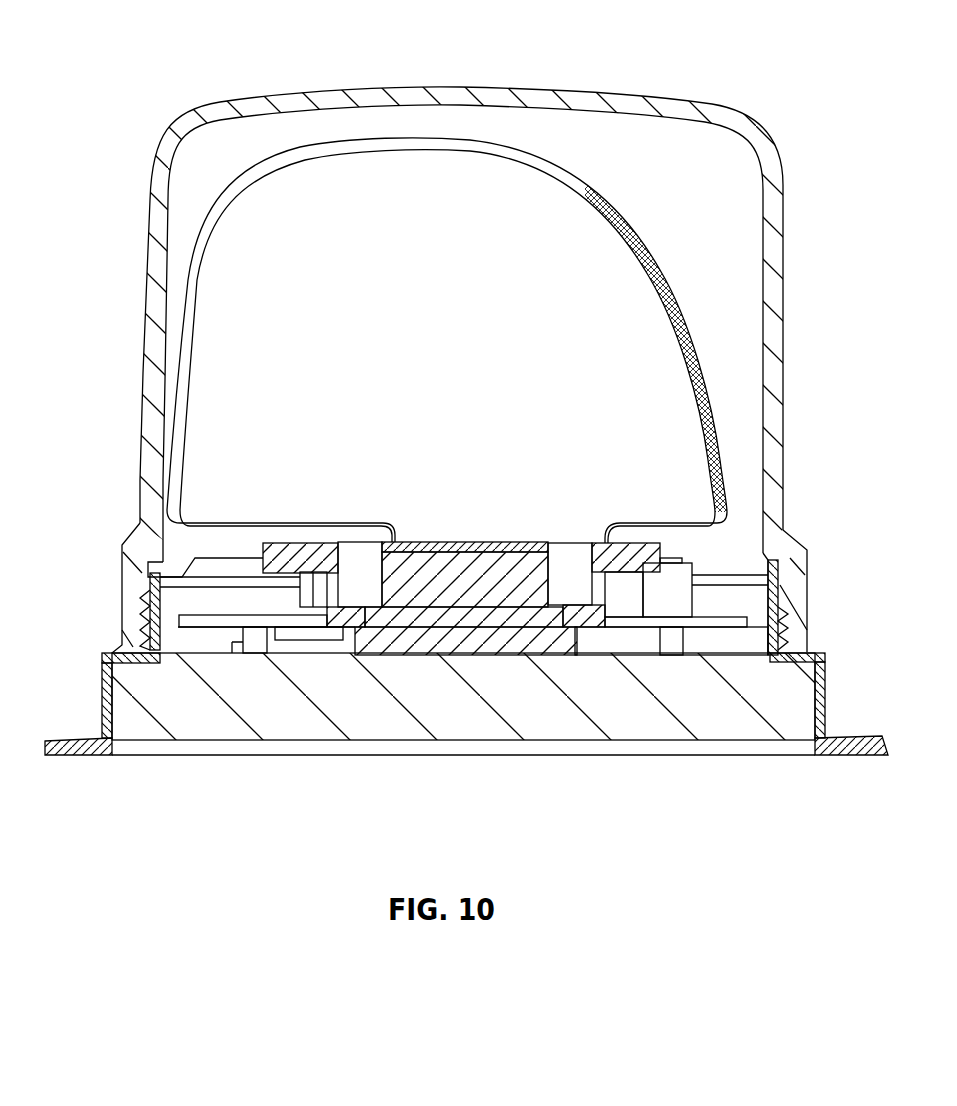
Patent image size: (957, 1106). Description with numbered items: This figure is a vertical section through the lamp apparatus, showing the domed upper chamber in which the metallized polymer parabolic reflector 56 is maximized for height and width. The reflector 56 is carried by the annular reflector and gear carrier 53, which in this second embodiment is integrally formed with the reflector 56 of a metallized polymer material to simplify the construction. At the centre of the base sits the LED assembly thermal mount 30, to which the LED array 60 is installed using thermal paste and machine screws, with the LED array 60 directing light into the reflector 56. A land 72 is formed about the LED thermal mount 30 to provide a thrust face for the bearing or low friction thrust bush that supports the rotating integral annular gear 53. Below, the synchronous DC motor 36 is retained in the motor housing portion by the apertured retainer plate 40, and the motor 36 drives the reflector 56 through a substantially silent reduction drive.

The parabolic reflector 56 is at (483, 240).
The reflector and gear carrier 53 is at (648, 553).
The LED array 60 is at (502, 550).
The land 72 is at (557, 606).
The retainer plate 40 is at (283, 608).
The synchronous DC motor 36 is at (297, 632).
The LED assembly thermal mount 30 is at (470, 588).